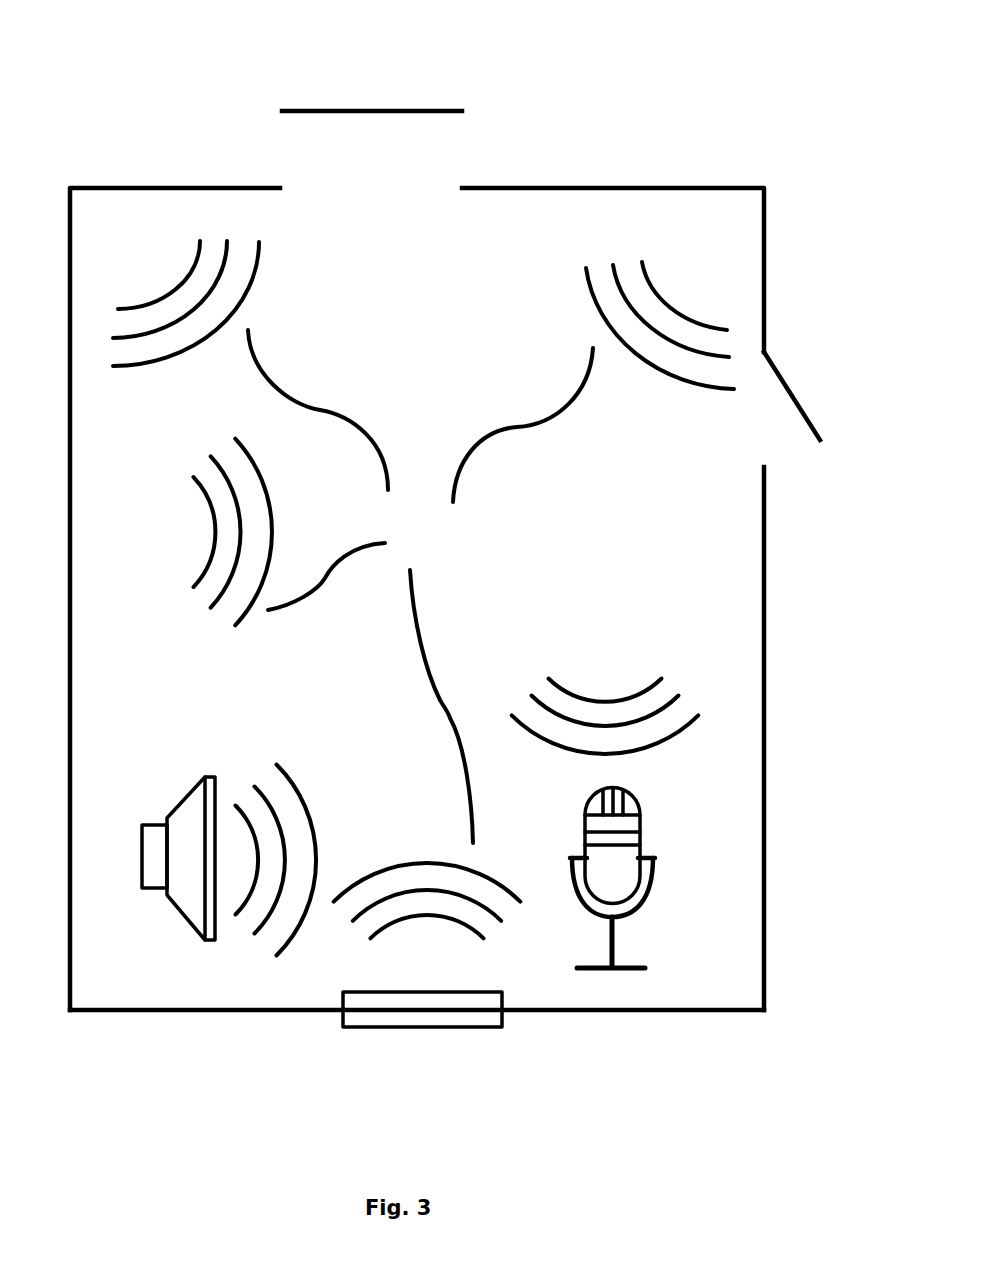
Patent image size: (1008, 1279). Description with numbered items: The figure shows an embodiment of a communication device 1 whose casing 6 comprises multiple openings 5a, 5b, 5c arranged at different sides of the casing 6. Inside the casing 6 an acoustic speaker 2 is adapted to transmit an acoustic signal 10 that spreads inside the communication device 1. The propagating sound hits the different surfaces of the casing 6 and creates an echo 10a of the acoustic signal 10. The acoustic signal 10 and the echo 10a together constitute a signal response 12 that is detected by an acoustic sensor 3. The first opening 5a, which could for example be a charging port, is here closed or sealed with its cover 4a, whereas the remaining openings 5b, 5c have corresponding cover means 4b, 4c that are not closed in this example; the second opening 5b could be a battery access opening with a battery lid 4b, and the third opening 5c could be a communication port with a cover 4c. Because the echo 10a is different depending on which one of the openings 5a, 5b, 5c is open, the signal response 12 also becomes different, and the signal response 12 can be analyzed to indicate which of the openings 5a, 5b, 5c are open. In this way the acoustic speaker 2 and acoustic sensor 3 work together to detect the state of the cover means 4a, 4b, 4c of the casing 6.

The communication device 1 is at (116, 103).
The acoustic speaker 2 is at (188, 797).
The acoustic sensor 3 is at (583, 862).
The cover 4a is at (502, 1020).
The battery lid 4b is at (299, 110).
The cover 4c is at (795, 410).
The first opening 5a is at (412, 1055).
The second opening 5b is at (353, 200).
The third opening 5c is at (745, 422).
The casing 6 is at (205, 1010).
The acoustic signal 10 is at (276, 758).
The echo 10a is at (420, 586).
The signal response 12 is at (607, 687).